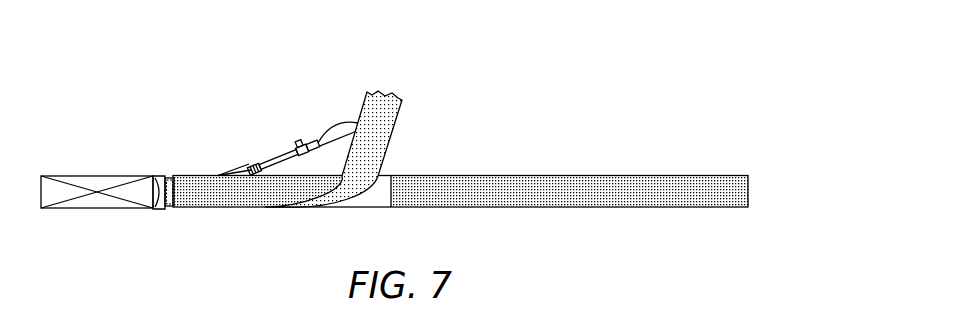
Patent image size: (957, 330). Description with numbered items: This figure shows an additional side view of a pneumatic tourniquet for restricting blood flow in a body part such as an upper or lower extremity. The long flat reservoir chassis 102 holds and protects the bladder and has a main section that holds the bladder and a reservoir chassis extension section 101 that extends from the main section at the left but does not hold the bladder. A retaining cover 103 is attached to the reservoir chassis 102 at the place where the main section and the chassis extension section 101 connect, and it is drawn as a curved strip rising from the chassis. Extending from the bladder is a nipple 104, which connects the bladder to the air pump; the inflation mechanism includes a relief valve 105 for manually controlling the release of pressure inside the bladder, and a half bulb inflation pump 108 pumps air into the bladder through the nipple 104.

The reservoir chassis extension section 101 is at (97, 177).
The reservoir chassis 102 is at (450, 179).
The retaining cover 103 is at (333, 135).
The nipple 104 is at (231, 158).
The relief valve 105 is at (306, 139).
The inflation pump 108 is at (338, 122).